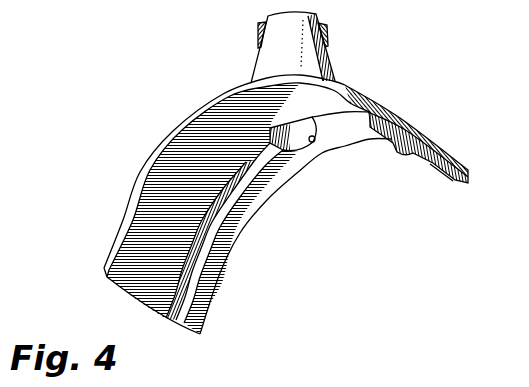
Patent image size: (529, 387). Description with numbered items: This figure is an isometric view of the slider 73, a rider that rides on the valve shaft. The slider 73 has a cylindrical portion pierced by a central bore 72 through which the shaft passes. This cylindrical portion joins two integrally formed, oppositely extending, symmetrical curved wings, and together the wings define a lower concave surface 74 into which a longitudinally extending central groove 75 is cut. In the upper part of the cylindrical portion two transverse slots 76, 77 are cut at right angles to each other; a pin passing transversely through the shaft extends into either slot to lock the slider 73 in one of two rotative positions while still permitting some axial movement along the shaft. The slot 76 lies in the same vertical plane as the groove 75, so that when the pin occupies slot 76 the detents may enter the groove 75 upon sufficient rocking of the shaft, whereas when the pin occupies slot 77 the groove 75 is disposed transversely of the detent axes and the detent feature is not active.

The central bore 72 is at (315, 141).
The slider 73 is at (335, 64).
The lower concave surface 74 is at (217, 270).
The central groove 75 is at (247, 180).
The transverse slot 76 is at (328, 34).
The transverse slot 77 is at (258, 33).